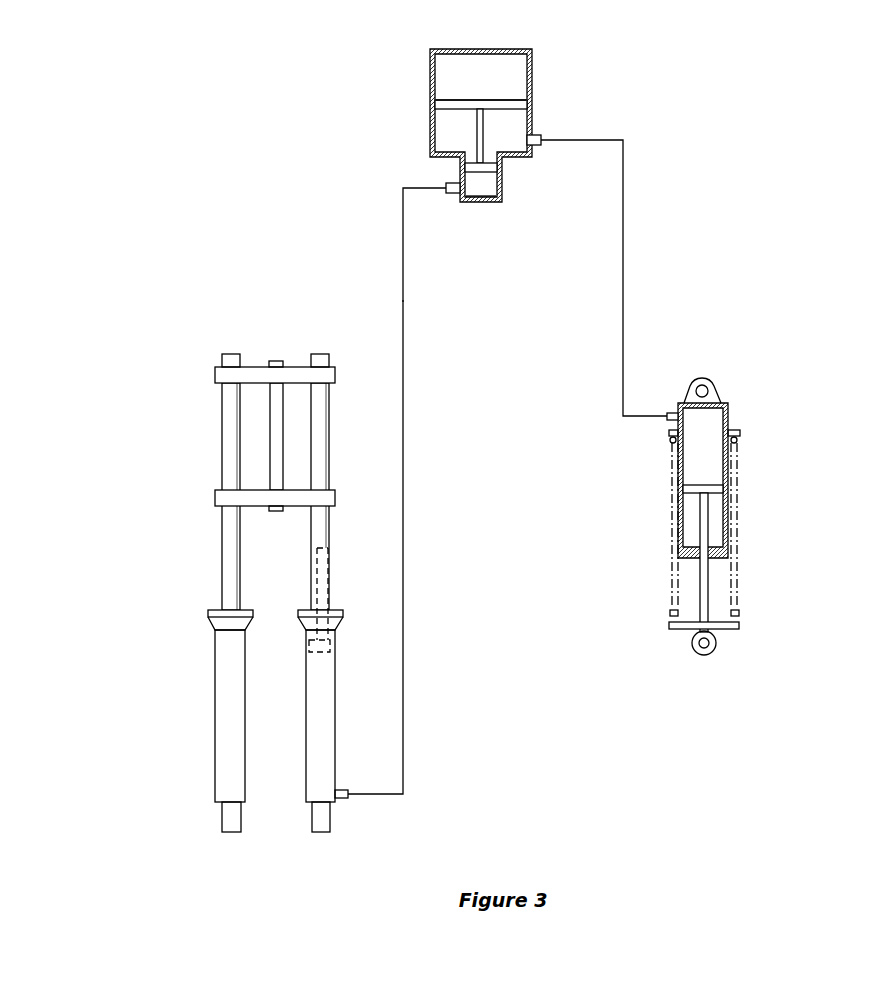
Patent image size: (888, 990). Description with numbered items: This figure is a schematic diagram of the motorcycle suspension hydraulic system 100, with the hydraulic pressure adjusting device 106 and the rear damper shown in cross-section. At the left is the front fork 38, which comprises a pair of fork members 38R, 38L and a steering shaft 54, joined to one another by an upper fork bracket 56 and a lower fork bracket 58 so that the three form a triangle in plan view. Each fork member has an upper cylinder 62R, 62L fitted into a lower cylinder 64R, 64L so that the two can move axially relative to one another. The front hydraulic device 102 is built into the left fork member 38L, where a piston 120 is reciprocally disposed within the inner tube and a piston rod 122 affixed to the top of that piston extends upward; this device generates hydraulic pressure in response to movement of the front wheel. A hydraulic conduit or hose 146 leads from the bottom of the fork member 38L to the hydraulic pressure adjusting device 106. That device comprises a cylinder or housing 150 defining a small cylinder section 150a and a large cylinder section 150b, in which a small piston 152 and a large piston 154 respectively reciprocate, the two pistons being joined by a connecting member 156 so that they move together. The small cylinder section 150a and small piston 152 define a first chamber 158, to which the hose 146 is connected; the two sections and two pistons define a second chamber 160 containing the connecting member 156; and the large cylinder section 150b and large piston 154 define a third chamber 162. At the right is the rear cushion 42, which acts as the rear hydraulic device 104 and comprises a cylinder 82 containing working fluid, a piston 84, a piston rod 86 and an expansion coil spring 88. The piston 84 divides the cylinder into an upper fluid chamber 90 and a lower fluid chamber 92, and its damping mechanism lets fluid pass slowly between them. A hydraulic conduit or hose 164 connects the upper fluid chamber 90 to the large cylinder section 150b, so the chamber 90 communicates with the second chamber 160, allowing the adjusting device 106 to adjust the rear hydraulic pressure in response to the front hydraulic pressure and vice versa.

The hydraulic system 100 is at (729, 74).
The hydraulic pressure adjusting device 106 is at (421, 72).
The cylinder or housing 150 is at (536, 66).
The small cylinder section 150a is at (500, 192).
The large cylinder section 150b is at (535, 88).
The small piston 152 is at (490, 182).
The large piston 154 is at (493, 98).
The connecting member 156 is at (485, 128).
The first chamber 158 is at (483, 190).
The second chamber 160 is at (448, 125).
The third chamber 162 is at (448, 78).
The hydraulic conduit or hose 146 is at (403, 322).
The hydraulic conduit or hose 164 is at (623, 283).
The front fork 38 is at (193, 397).
The fork member 38R is at (190, 607).
The fork member 38L is at (346, 607).
The steering shaft 54 is at (283, 425).
The upper fork bracket 56 is at (296, 373).
The lower fork bracket 58 is at (290, 488).
The upper cylinder 62R is at (222, 435).
The upper cylinder 62L is at (329, 478).
The lower cylinder 64R is at (216, 700).
The lower cylinder 64L is at (335, 705).
The front hydraulic device 102 is at (331, 582).
The piston 120 is at (322, 651).
The piston rod 122 is at (326, 596).
The rear cushion 42 is at (752, 430).
The rear hydraulic device 104 is at (721, 504).
The cylinder 82 is at (731, 410).
The piston 84 is at (715, 494).
The piston rod 86 is at (712, 582).
The expansion coil spring 88 is at (740, 472).
The upper fluid chamber 90 is at (698, 455).
The lower fluid chamber 92 is at (692, 526).